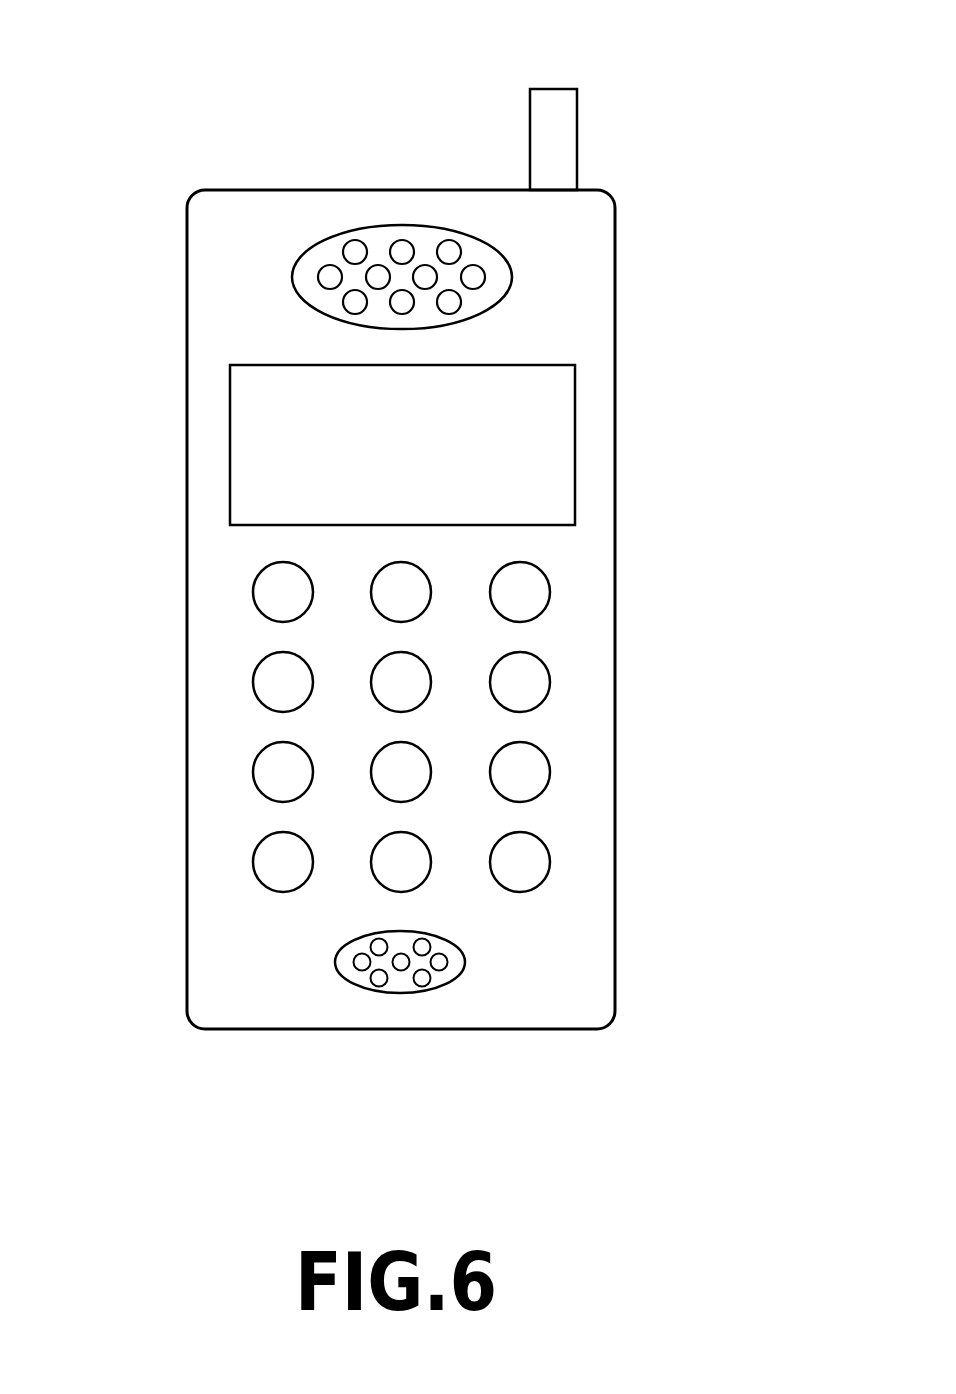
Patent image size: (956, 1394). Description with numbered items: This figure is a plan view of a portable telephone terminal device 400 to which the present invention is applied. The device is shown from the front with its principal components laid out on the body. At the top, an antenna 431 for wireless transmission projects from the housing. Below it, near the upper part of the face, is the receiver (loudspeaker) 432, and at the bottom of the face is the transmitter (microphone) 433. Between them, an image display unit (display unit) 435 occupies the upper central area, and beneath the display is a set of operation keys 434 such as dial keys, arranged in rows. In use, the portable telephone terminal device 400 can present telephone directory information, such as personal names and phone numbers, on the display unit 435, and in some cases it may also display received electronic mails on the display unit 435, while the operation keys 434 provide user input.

The portable telephone terminal device 400 is at (168, 172).
The antenna 431 is at (548, 89).
The receiver (loudspeaker) 432 is at (293, 276).
The transmitter (microphone) 433 is at (453, 972).
The operation keys 434 is at (167, 560).
The image display unit (display unit) 435 is at (230, 450).